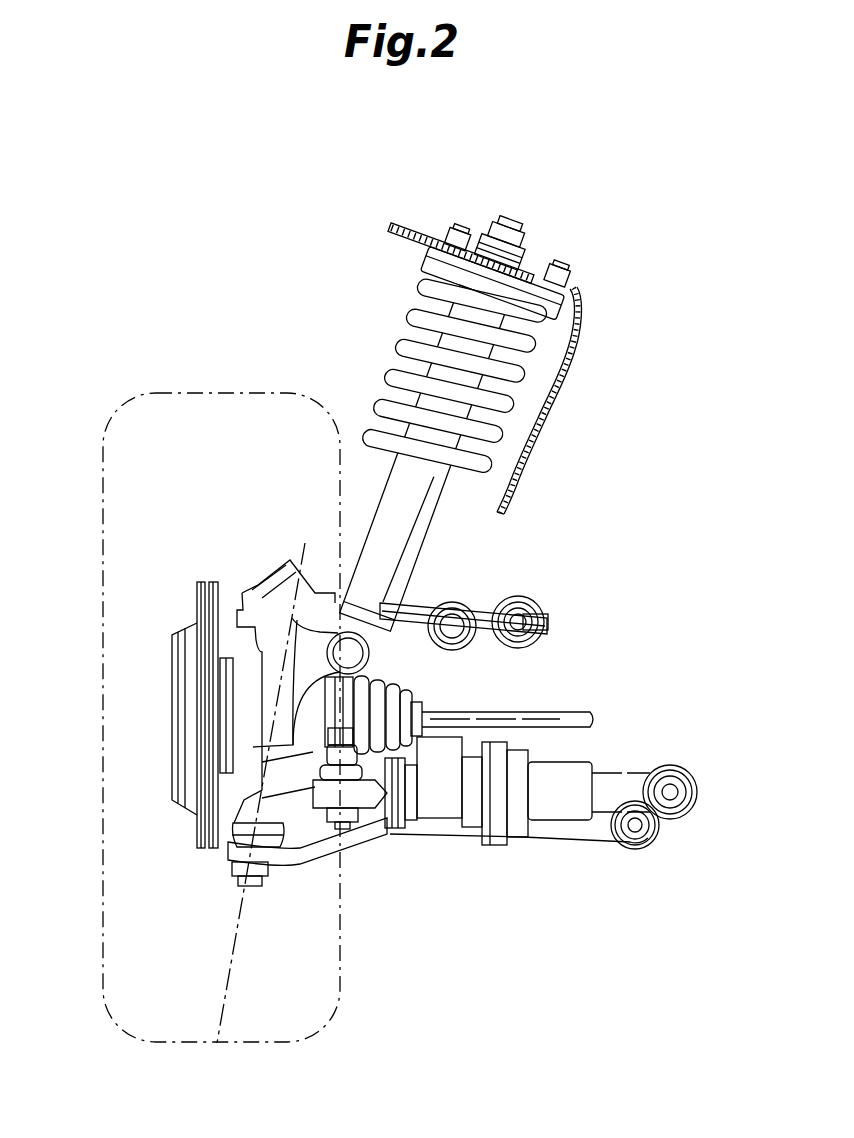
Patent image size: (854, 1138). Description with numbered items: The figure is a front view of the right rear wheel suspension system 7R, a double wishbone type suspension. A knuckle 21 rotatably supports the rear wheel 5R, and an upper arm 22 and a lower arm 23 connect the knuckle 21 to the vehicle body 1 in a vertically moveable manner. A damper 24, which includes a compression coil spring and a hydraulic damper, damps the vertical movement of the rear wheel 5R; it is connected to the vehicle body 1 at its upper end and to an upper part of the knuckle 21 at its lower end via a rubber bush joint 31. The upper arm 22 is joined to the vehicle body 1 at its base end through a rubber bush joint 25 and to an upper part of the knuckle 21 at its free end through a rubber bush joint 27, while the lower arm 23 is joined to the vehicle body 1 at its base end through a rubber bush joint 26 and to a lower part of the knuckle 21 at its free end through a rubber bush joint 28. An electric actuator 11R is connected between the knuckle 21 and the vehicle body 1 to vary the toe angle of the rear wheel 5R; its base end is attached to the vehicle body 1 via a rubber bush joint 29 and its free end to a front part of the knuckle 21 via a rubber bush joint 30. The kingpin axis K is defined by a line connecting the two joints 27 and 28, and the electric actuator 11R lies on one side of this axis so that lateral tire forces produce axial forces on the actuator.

The vehicle body 1 is at (410, 233).
The damper 24 is at (385, 362).
The rear wheel suspension system 7R is at (628, 345).
The rear wheel 5R is at (196, 393).
The rubber bush joint 27 is at (288, 566).
The upper arm 22 is at (418, 605).
The rubber bush joint 25 is at (548, 603).
The rubber bush joint 31 is at (370, 665).
The knuckle 21 is at (250, 723).
The rubber bush joint 29 is at (684, 775).
The rubber bush joint 26 is at (648, 840).
The electric actuator 11R is at (525, 828).
The lower arm 23 is at (380, 830).
The rubber bush joint 30 is at (322, 810).
The rubber bush joint 28 is at (250, 850).
The kingpin axis K is at (242, 940).